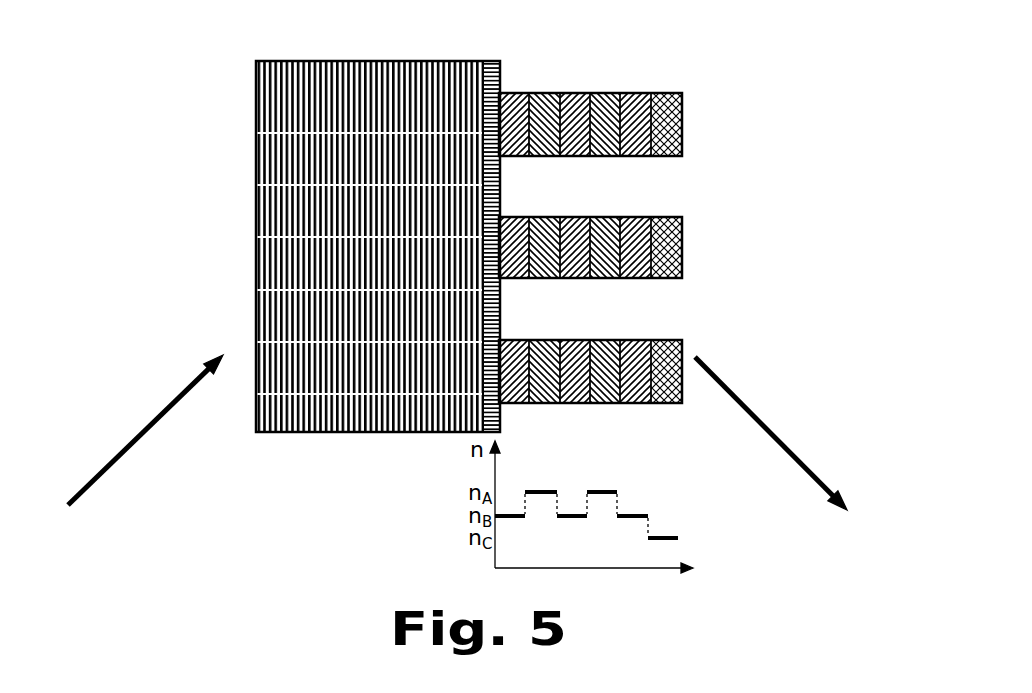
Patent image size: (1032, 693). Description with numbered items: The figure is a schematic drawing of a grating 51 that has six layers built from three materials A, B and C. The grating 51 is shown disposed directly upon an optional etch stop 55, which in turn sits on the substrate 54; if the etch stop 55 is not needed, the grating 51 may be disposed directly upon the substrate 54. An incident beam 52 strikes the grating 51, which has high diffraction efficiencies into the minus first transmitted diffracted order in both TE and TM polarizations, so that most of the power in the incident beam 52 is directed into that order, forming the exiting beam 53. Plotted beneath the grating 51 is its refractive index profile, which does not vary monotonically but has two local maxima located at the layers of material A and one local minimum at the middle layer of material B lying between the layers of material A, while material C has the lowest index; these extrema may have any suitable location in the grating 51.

The grating 51 is at (522, 242).
The incident beam 52 is at (133, 435).
The exiting beam 53 is at (750, 405).
The substrate 54 is at (268, 208).
The etch stop 55 is at (500, 73).
The material A is at (542, 278).
The material B is at (515, 156).
The material C is at (682, 118).